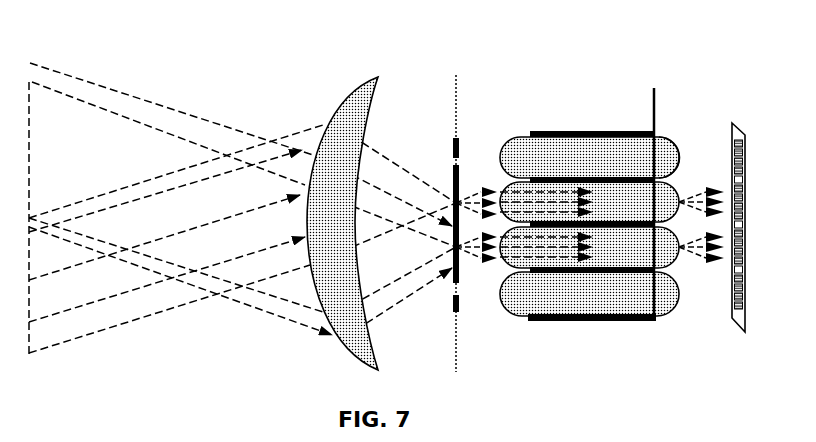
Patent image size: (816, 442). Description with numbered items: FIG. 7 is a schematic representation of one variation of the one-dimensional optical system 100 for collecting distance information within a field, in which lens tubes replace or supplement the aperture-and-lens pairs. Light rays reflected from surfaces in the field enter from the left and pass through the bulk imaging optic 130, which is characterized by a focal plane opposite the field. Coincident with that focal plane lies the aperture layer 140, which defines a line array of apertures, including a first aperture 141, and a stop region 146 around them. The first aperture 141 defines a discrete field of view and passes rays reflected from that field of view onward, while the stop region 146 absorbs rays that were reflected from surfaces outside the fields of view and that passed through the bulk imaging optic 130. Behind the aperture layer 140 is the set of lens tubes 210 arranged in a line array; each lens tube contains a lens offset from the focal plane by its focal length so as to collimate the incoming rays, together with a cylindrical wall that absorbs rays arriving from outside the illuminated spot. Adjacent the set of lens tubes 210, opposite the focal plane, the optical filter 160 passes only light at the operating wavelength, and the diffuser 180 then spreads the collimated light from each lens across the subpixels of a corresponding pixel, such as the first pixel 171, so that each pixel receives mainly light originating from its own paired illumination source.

The one-dimensional optical system 100 is at (101, 58).
The bulk imaging optic 130 is at (340, 100).
The aperture layer 140 is at (460, 140).
The first aperture 141 is at (448, 186).
The stop region 146 is at (452, 305).
The set of lens tubes 210 is at (565, 130).
The optical filter 160 is at (651, 193).
The diffuser 180 is at (670, 157).
The first pixel 171 is at (745, 193).